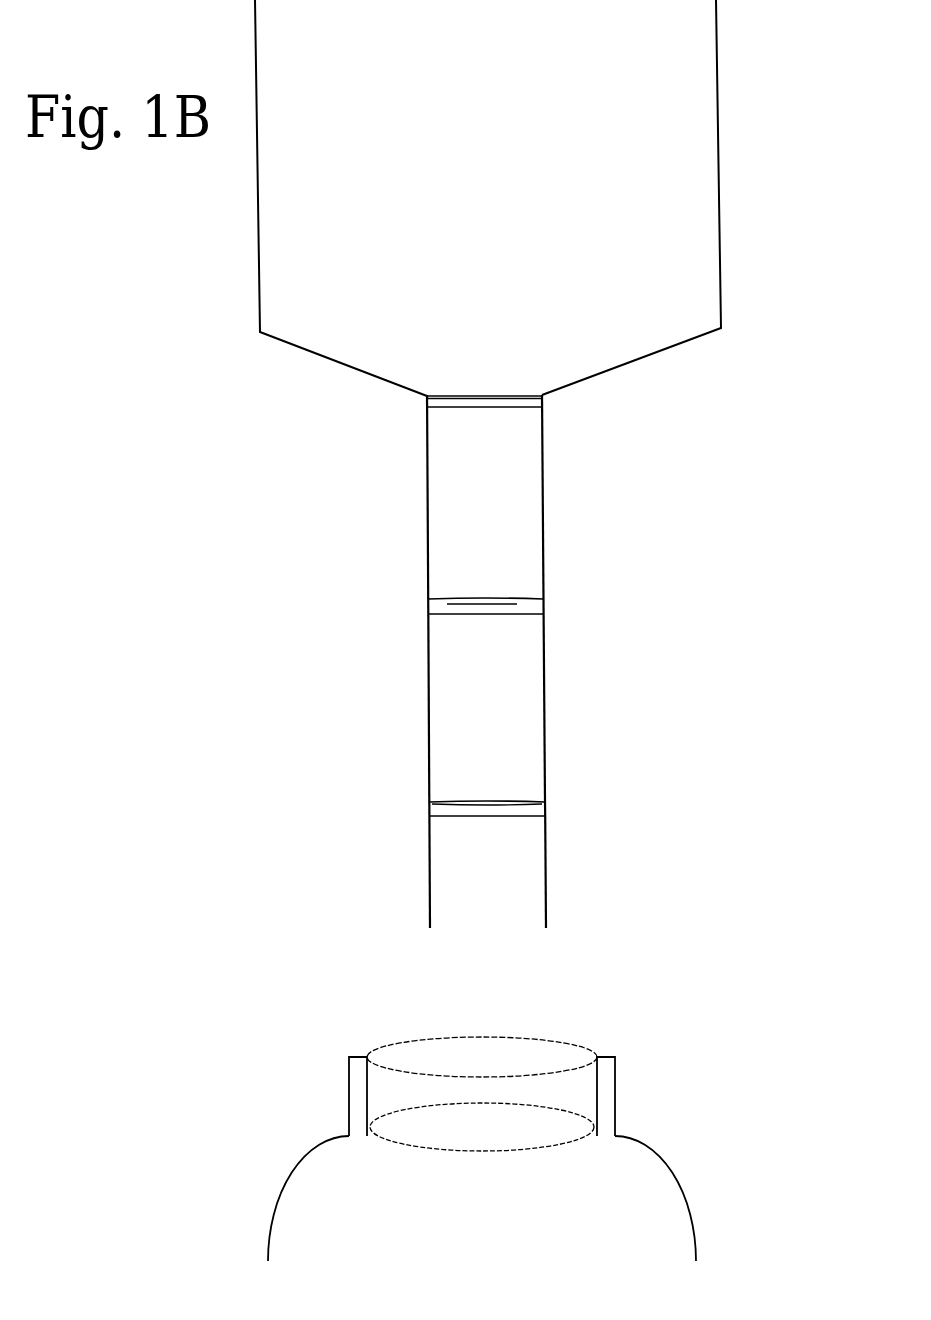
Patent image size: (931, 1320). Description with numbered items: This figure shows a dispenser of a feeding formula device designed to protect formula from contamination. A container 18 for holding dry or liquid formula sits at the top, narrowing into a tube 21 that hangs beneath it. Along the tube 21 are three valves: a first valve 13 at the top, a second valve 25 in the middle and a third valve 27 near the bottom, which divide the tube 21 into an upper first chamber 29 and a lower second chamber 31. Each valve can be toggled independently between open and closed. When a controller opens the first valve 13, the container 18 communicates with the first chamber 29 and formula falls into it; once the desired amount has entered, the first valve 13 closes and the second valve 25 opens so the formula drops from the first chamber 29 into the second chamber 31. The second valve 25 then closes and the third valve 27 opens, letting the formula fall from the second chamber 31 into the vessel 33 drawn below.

The first valve 13 is at (545, 401).
The container 18 is at (722, 149).
The tube 21 is at (195, 564).
The second valve 25 is at (546, 593).
The third valve 27 is at (547, 796).
The first chamber 29 is at (475, 500).
The second chamber 31 is at (460, 702).
The vessel 33 is at (628, 1132).